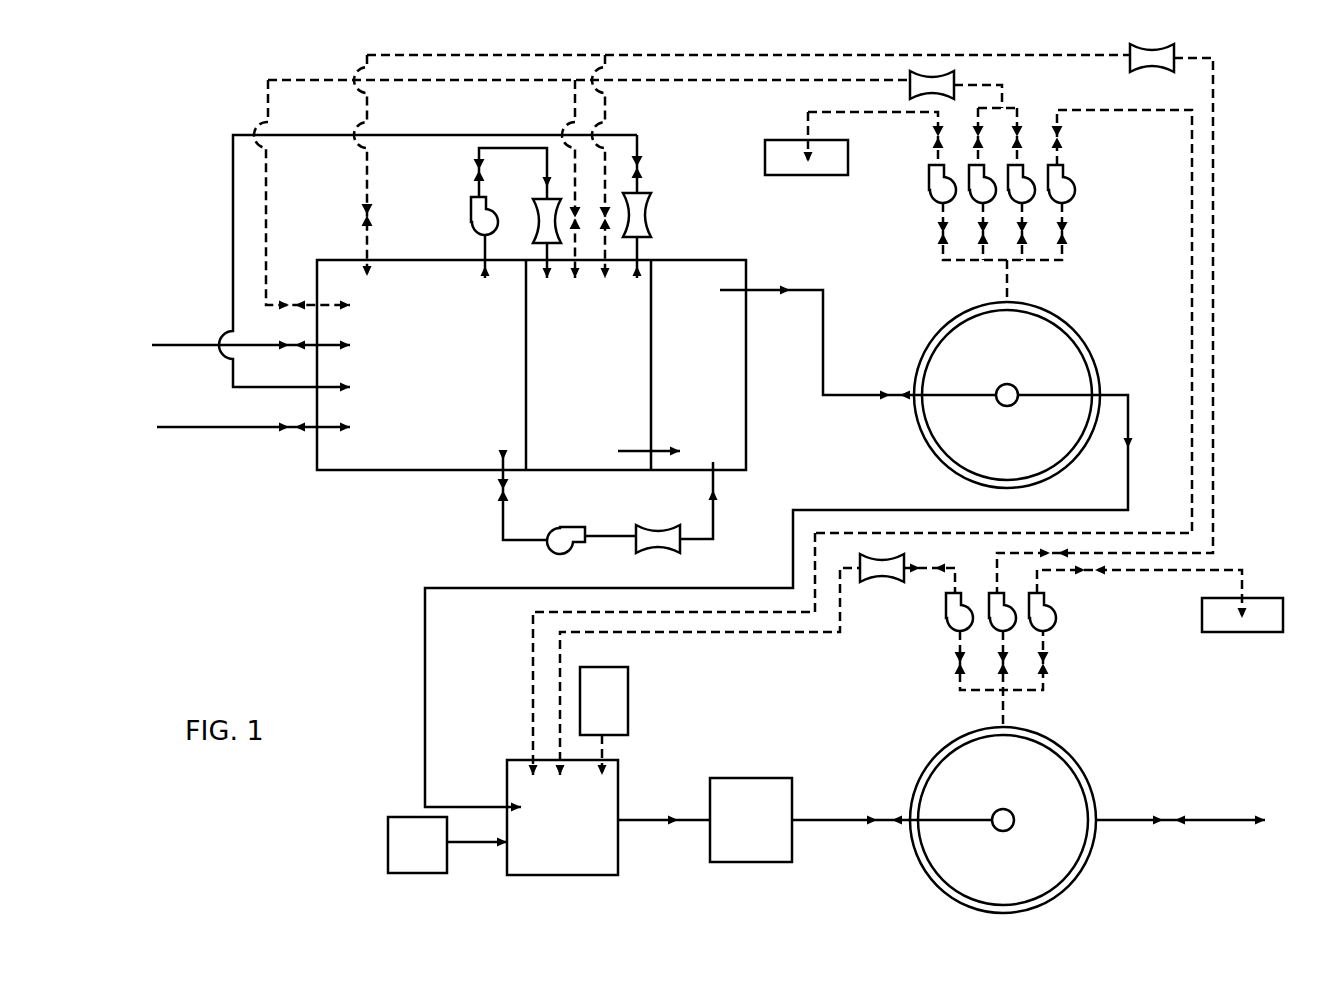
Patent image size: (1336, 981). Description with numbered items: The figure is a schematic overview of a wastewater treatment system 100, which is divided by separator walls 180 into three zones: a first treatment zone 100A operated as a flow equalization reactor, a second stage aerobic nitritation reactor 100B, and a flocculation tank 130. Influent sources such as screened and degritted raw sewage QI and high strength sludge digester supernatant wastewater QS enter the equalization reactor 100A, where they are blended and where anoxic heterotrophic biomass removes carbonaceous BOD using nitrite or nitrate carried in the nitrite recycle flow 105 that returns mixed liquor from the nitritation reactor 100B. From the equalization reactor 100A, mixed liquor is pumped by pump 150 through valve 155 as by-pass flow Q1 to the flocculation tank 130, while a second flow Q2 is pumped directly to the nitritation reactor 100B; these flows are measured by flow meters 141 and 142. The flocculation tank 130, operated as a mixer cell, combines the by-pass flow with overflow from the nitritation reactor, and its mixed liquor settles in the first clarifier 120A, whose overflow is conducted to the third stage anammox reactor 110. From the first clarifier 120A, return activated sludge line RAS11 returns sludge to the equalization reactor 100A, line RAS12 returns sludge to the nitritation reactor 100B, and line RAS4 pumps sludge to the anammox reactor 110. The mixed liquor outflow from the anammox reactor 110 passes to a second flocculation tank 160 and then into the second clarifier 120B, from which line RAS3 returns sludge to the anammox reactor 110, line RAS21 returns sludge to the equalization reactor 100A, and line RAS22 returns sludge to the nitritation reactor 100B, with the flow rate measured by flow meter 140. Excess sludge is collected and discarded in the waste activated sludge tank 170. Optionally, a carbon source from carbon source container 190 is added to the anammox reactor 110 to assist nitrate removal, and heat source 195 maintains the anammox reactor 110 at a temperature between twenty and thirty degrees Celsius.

The wastewater treatment system 100 is at (385, 470).
The first treatment zone (equalization reactor) 100A is at (421, 365).
The second stage aerobic nitritation reactor 100B is at (588, 365).
The nitrite recycle flow (NiR) 105 is at (230, 222).
The anammox reactor 110 is at (620, 793).
The first clarifier 120A is at (1087, 342).
The second clarifier 120B is at (1077, 763).
The flocculation tank 130 is at (698, 365).
The flow meter 140 is at (872, 582).
The flow meter 141 is at (655, 537).
The flow meter 142 is at (535, 223).
The pump 150 is at (571, 533).
The valve 155 is at (493, 493).
The flocculation tank 160 is at (747, 775).
The waste activated sludge tank 170 is at (818, 175).
The separator walls 180 is at (651, 403).
The carbon source container 190 is at (632, 712).
The heat source 195 is at (383, 848).
The return activated sludge line RAS11 is at (268, 98).
The return activated sludge line RAS12 is at (575, 100).
The return activated sludge line RAS21 is at (367, 243).
The return activated sludge line RAS22 is at (612, 102).
The return activated sludge line RAS3 is at (708, 637).
The return activated sludge line RAS4 is at (530, 650).
The sludge digester process supernatant wastewater QS is at (185, 343).
The screened and degritted raw sewage QI is at (202, 425).
The by-pass flow Q1 is at (717, 515).
The second flow of partially treated wastewater Q2 is at (483, 247).